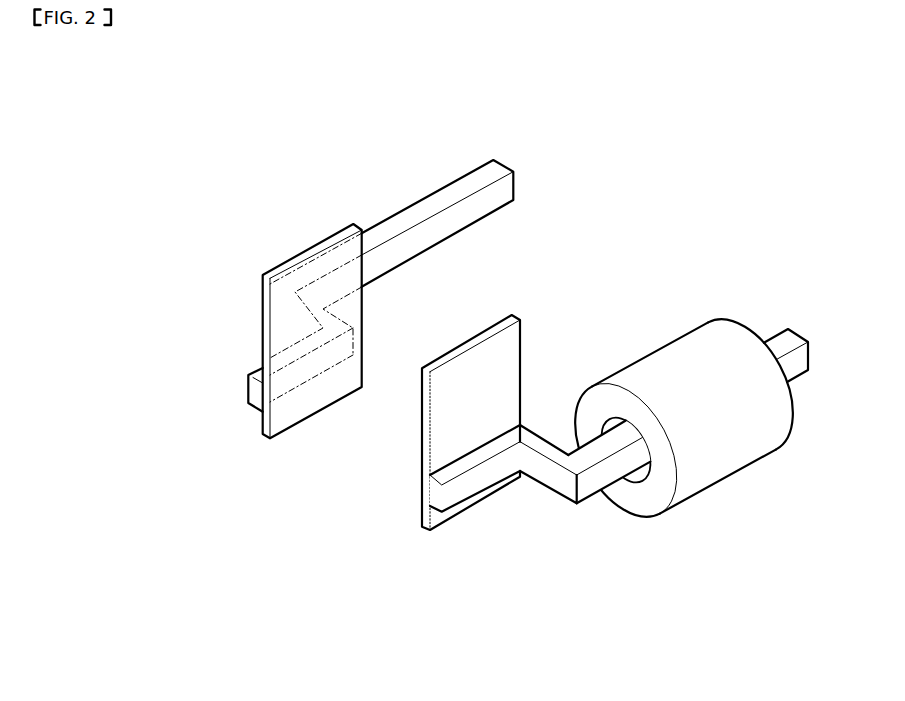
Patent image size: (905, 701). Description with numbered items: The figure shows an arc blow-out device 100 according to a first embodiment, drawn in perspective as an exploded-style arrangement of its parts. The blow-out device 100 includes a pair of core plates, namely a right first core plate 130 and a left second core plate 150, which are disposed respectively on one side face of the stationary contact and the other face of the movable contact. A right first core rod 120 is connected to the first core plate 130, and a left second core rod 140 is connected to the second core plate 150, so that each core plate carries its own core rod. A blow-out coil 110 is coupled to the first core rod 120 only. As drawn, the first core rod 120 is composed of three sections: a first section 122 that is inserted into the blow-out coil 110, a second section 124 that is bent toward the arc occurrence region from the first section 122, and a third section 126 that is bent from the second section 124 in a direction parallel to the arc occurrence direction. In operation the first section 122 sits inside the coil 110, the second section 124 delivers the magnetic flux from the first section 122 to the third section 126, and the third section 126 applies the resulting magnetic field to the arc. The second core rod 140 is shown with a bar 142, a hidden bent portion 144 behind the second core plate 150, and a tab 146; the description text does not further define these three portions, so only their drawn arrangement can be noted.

The blow-out device 100 is at (700, 175).
The blow-out coil 110 is at (727, 462).
The first core rod 120 is at (620, 617).
The first section 122 is at (605, 475).
The second section 124 is at (545, 473).
The third section 126 is at (472, 487).
The first core plate 130 is at (427, 446).
The second core rod 140 is at (170, 202).
The extension bar 142 is at (398, 222).
The hidden bent portion 144 is at (293, 323).
The tab portion 146 is at (262, 368).
The second core plate 150 is at (357, 313).